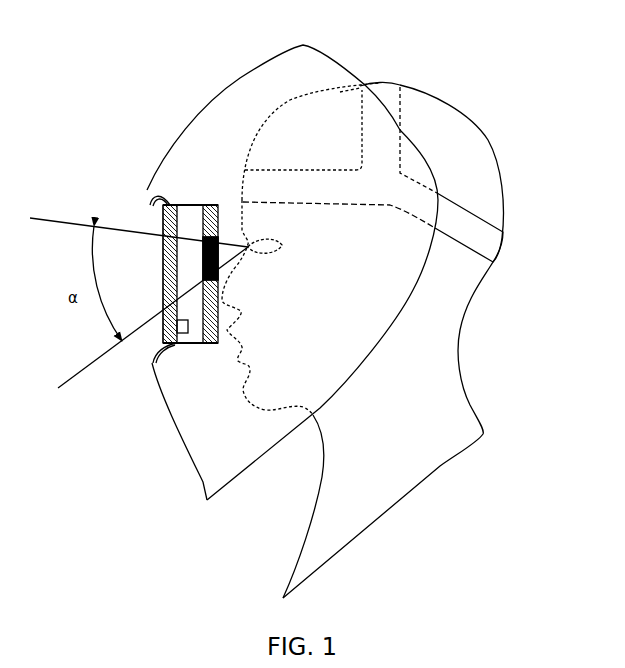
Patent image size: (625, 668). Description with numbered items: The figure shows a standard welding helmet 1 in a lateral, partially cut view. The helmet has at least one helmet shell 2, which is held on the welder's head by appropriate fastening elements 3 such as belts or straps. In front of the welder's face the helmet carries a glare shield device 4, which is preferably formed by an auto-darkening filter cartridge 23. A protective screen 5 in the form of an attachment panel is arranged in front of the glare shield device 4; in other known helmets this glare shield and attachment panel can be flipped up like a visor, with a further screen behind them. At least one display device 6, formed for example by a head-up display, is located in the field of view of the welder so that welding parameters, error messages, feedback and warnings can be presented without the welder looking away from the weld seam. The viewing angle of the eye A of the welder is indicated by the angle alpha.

The welding helmet 1 is at (505, 57).
The helmet shell 2 is at (292, 255).
The fastening elements 3 is at (480, 232).
The glare shield device 4 is at (157, 301).
The auto-darkening filter cartridge 23 is at (186, 334).
The protective screen 5 is at (160, 208).
The display device 6 is at (203, 258).
The eye A is at (263, 240).